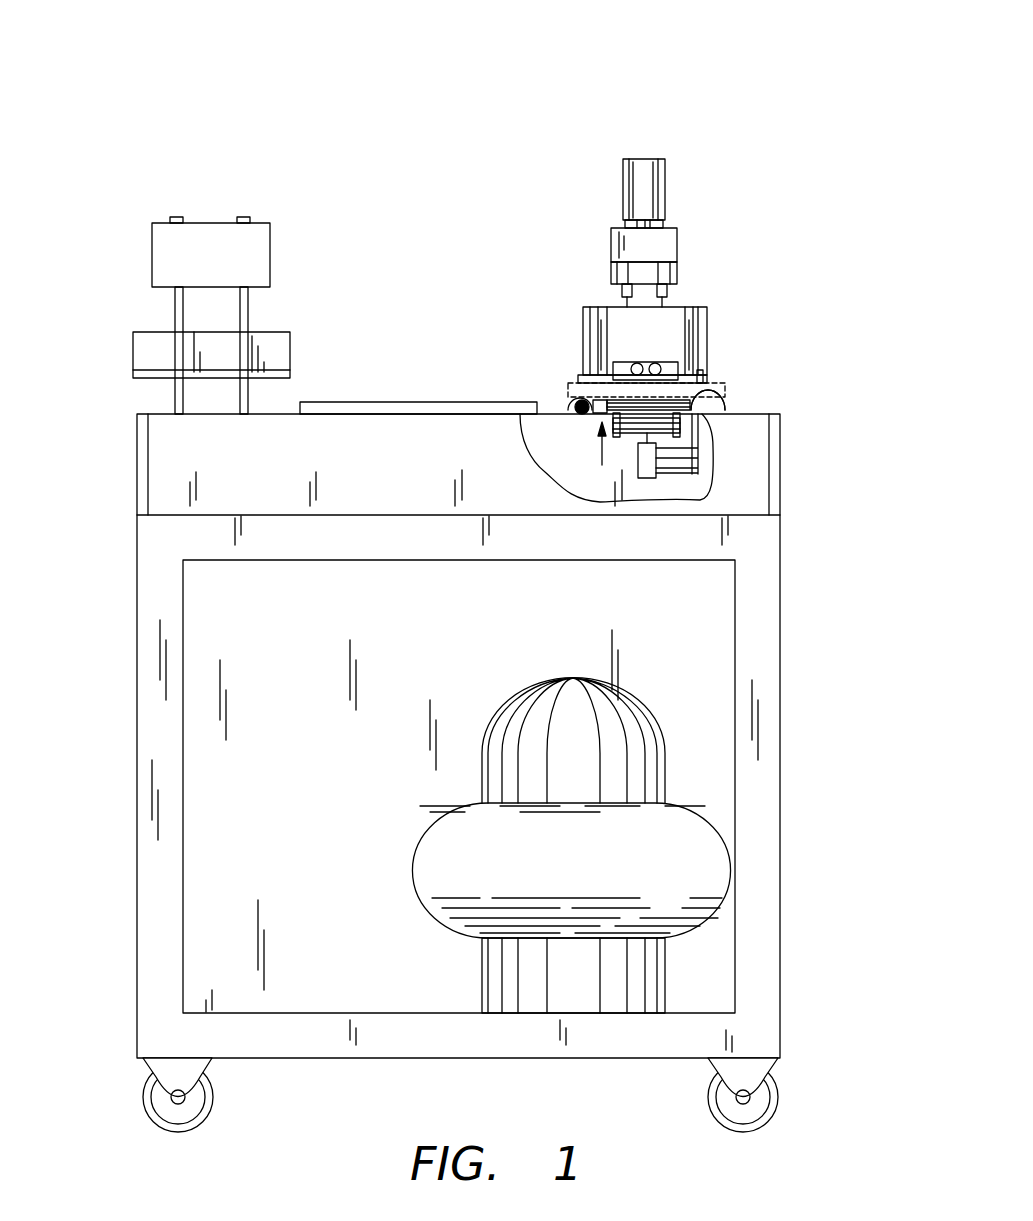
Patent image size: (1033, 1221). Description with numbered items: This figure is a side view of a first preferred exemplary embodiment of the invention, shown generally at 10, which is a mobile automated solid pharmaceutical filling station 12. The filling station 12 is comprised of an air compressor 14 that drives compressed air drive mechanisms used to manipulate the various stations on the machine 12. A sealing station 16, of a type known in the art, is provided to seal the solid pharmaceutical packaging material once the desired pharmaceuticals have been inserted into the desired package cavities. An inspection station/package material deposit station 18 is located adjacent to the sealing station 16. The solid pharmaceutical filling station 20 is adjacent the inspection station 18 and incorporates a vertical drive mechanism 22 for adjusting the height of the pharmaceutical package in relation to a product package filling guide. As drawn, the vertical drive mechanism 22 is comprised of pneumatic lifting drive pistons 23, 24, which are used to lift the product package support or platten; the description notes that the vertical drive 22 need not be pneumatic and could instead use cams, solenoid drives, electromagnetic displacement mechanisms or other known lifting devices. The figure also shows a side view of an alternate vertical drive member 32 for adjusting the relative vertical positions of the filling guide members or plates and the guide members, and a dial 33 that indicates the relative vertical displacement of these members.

The first preferred exemplary embodiment 10 is at (262, 113).
The mobile automated solid pharmaceutical filling station 12 is at (677, 610).
The air compressor 14 is at (613, 752).
The sealing station 16 is at (147, 350).
The inspection station/package material deposit station 18 is at (425, 390).
The solid pharmaceutical filling station 20 is at (683, 303).
The vertical drive mechanism 22 is at (648, 460).
The pneumatic lifting drive piston 23 is at (683, 426).
The pneumatic lifting drive piston 24 is at (702, 428).
The alternate vertical drive member 32 is at (576, 400).
The dial 33 is at (717, 390).